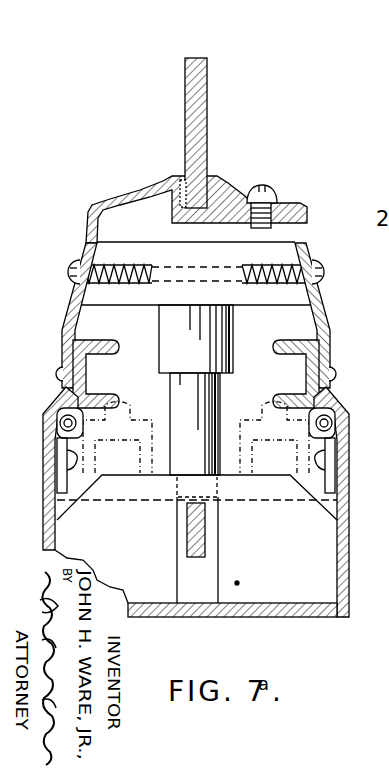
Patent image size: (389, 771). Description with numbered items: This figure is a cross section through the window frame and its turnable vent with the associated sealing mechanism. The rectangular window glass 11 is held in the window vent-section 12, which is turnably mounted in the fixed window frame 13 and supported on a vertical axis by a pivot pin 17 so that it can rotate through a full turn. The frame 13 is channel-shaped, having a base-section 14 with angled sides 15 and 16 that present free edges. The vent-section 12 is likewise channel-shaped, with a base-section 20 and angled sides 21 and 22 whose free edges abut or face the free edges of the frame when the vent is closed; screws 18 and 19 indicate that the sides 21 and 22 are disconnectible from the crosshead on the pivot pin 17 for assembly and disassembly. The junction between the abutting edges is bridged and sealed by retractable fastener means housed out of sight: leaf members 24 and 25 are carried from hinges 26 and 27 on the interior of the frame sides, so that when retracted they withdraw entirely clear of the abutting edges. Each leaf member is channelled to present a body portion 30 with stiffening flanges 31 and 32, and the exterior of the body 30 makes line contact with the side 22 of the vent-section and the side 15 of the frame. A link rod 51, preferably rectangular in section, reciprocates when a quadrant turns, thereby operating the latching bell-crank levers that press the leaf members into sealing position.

The window glass 11 is at (207, 103).
The window vent-section 12 is at (196, 259).
The fixed window frame 13 is at (197, 539).
The base-section 14 is at (240, 617).
The angled side 15 is at (348, 542).
The angled side 16 is at (45, 517).
The pivot pin 17 is at (212, 423).
The screw 18 is at (72, 270).
The screw 19 is at (322, 268).
The base-section 20 is at (138, 188).
The angled side 21 is at (84, 231).
The angled side 22 is at (317, 300).
The leaf member 24 is at (335, 372).
The leaf member 25 is at (62, 367).
The hinge 26 is at (336, 453).
The hinge 27 is at (58, 458).
The body portion 30 is at (87, 377).
The stiffening flange 31 is at (88, 342).
The stiffening flange 32 is at (107, 395).
The link rod 51 is at (187, 530).